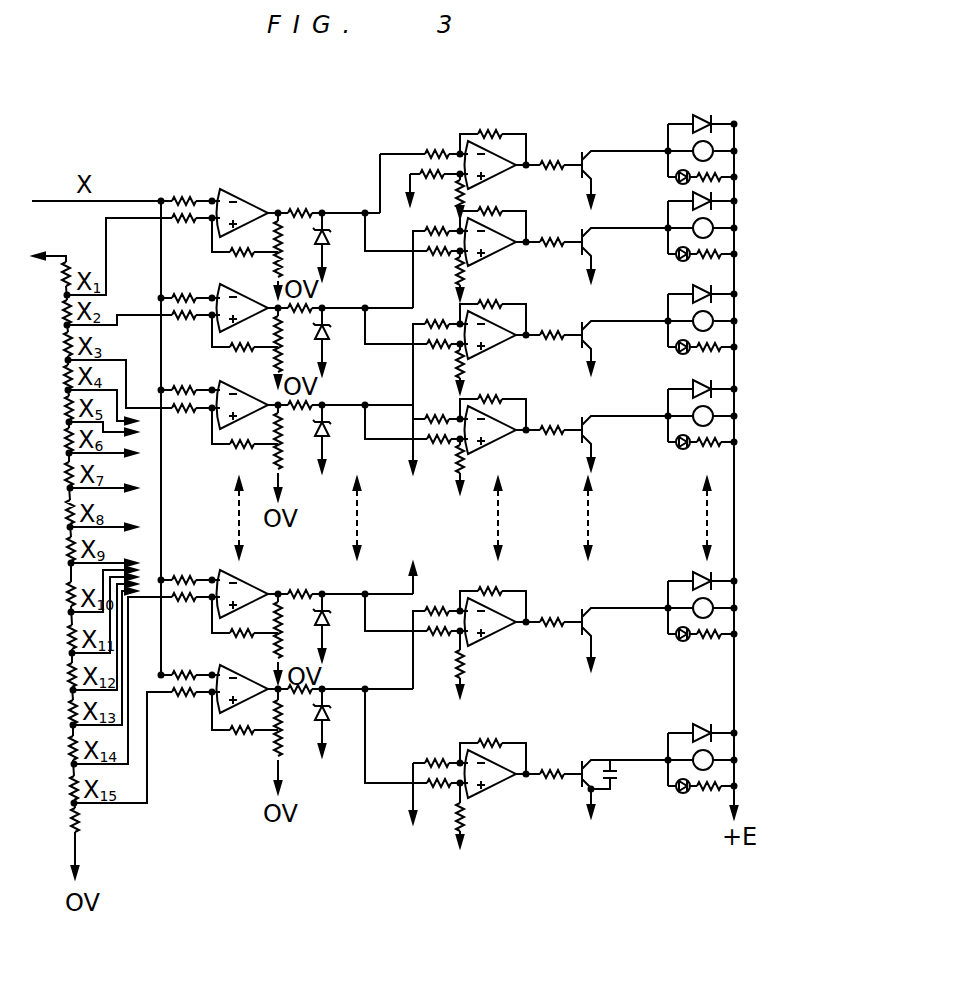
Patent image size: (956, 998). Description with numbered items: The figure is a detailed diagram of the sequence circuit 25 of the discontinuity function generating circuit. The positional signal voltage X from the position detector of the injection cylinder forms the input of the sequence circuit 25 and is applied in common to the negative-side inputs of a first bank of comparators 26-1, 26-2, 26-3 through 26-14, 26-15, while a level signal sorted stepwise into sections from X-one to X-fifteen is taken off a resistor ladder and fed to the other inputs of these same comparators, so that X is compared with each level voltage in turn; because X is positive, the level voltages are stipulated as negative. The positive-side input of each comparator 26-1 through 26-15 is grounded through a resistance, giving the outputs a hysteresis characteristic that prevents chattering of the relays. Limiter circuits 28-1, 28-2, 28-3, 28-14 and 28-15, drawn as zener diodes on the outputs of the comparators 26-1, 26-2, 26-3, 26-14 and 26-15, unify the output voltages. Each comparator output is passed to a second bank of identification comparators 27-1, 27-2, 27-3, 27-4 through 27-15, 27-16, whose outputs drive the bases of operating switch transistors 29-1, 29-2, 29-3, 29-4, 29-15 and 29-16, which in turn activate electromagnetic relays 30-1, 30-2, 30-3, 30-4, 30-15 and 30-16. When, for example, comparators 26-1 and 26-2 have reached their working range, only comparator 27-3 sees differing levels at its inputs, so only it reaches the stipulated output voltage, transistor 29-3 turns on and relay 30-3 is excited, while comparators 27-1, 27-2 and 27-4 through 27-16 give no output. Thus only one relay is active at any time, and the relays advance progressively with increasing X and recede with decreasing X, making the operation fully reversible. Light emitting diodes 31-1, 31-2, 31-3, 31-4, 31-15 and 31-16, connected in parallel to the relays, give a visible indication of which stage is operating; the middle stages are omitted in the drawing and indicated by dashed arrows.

The sequence circuit 25 is at (403, 120).
The comparator 26-1 is at (250, 181).
The comparator 26-2 is at (252, 284).
The comparator 26-3 is at (252, 380).
The comparator 26-14 is at (297, 580).
The comparator 26-15 is at (250, 661).
The comparator 27-1 is at (493, 168).
The comparator 27-2 is at (493, 245).
The comparator 27-3 is at (493, 348).
The comparator 27-4 is at (493, 437).
The comparator 27-15 is at (493, 639).
The comparator 27-16 is at (493, 791).
The limiter circuit 28-1 is at (330, 234).
The limiter circuit 28-2 is at (330, 330).
The limiter circuit 28-3 is at (330, 427).
The limiter circuit 28-14 is at (330, 617).
The limiter circuit 28-15 is at (318, 722).
The transistor 29-1 is at (585, 163).
The transistor 29-2 is at (585, 240).
The transistor 29-3 is at (585, 333).
The transistor 29-4 is at (585, 428).
The transistor 29-15 is at (586, 636).
The transistor 29-16 is at (584, 762).
The electromagnetic relay 30-1 is at (709, 146).
The electromagnetic relay 30-2 is at (709, 223).
The electromagnetic relay 30-3 is at (709, 316).
The electromagnetic relay 30-4 is at (709, 411).
The electromagnetic relay 30-15 is at (709, 603).
The electromagnetic relay 30-16 is at (709, 755).
The light emitting diode 31-1 is at (678, 183).
The light emitting diode 31-2 is at (678, 259).
The light emitting diode 31-3 is at (678, 352).
The light emitting diode 31-4 is at (680, 448).
The light emitting diode 31-15 is at (686, 642).
The light emitting diode 31-16 is at (688, 794).